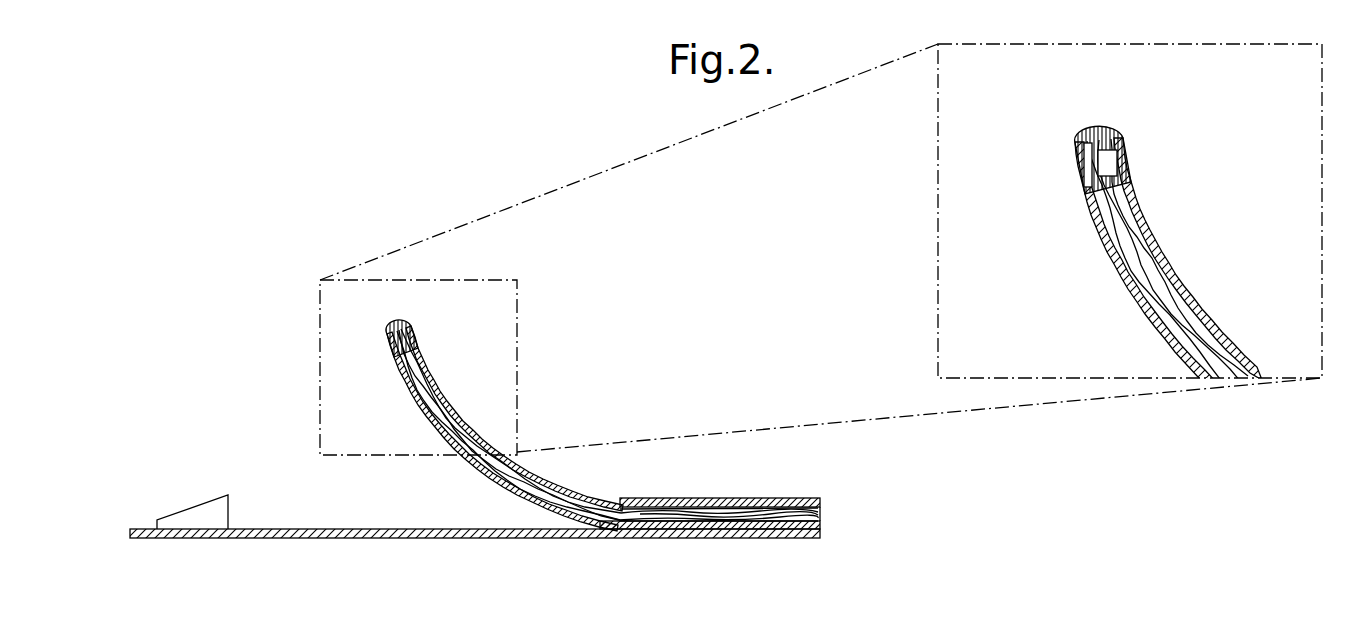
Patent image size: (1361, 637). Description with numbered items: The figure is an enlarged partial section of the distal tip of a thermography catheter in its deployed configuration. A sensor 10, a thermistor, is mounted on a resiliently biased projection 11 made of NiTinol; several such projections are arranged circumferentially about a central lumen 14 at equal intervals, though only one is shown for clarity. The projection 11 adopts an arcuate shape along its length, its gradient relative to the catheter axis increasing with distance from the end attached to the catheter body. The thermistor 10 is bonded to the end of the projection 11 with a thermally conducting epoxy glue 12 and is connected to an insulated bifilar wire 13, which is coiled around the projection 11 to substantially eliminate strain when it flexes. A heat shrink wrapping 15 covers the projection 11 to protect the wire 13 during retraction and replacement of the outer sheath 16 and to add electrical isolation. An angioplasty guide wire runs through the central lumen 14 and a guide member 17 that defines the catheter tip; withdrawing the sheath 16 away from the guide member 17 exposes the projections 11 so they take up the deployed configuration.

The sensor 10 is at (404, 330).
The resiliently biased projection 11 is at (828, 324).
The thermally conducting epoxy glue 12 is at (1082, 156).
The insulated bifilar wire 13 is at (581, 505).
The central lumen 14 is at (652, 538).
The heat shrink wrapping 15 is at (440, 402).
The outer sheath 16 is at (762, 480).
The guide member 17 is at (197, 503).